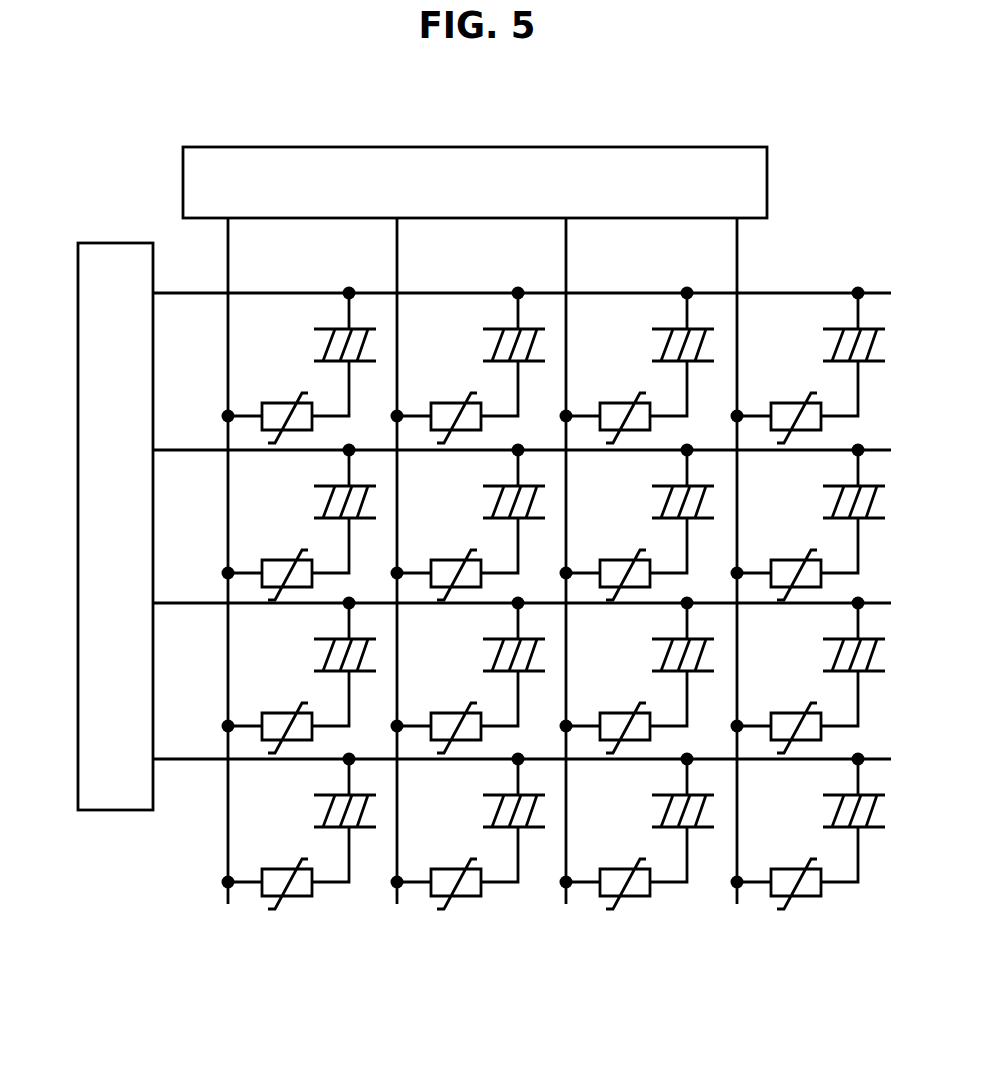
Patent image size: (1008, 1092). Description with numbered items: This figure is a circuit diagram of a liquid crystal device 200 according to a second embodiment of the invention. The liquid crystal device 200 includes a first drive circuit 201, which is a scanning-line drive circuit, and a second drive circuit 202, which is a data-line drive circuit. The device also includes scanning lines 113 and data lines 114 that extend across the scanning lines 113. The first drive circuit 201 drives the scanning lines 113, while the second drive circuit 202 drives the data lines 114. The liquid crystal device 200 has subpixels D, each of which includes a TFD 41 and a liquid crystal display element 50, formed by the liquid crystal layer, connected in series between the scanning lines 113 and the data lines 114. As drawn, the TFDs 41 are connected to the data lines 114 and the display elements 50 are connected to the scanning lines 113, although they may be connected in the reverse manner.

The liquid crystal device 200 is at (526, 554).
The first drive circuit 201 is at (108, 243).
The second drive circuit 202 is at (625, 146).
The scanning lines 113 is at (205, 757).
The data lines 114 is at (435, 251).
The liquid crystal display element 50 is at (367, 832).
The TFD 41 is at (293, 900).
The subpixels D is at (281, 858).